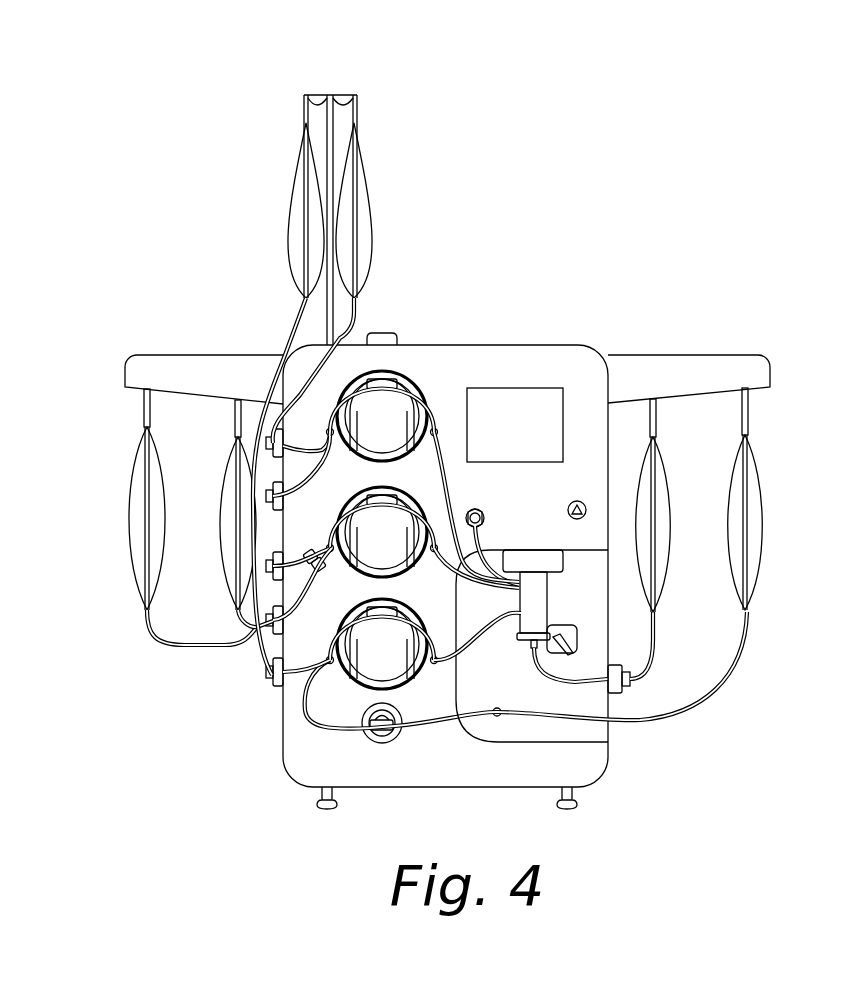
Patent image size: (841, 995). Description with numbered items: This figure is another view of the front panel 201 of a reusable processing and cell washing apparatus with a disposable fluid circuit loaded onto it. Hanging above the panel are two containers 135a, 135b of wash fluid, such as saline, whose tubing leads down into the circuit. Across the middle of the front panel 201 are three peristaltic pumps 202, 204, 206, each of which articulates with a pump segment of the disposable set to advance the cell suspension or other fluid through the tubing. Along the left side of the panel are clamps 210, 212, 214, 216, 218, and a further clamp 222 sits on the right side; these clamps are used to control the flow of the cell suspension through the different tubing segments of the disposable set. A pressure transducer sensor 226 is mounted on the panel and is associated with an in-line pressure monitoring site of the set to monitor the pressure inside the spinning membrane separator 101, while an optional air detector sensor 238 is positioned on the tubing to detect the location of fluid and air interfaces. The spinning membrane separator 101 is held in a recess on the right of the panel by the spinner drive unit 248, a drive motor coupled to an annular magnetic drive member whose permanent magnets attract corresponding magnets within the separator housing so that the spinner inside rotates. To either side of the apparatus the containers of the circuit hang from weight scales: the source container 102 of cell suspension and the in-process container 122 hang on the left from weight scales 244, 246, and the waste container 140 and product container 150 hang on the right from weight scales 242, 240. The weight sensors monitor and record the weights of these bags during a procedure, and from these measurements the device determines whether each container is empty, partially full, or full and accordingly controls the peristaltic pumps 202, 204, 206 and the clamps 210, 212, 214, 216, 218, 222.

The spinning membrane separator 101 is at (548, 604).
The source container 102 is at (130, 540).
The in-process container 122 is at (232, 520).
The wash fluid container 135a is at (296, 186).
The wash fluid container 135b is at (368, 228).
The waste container 140 is at (660, 558).
The product container 150 is at (752, 505).
The front panel 201 is at (430, 773).
The peristaltic pump 202 is at (397, 441).
The peristaltic pump 204 is at (397, 555).
The peristaltic pump 206 is at (397, 669).
The clamp 210 is at (307, 456).
The clamp 212 is at (303, 489).
The clamp 214 is at (306, 558).
The clamp 216 is at (300, 608).
The clamp 218 is at (275, 688).
The clamp 222 is at (608, 690).
The pressure transducer sensor 226 is at (486, 517).
The air detector sensor 238 is at (326, 570).
The weight scale 240 is at (762, 410).
The weight scale 242 is at (657, 418).
The weight scale 244 is at (143, 408).
The weight scale 246 is at (235, 408).
The spinner drive unit 248 is at (563, 556).